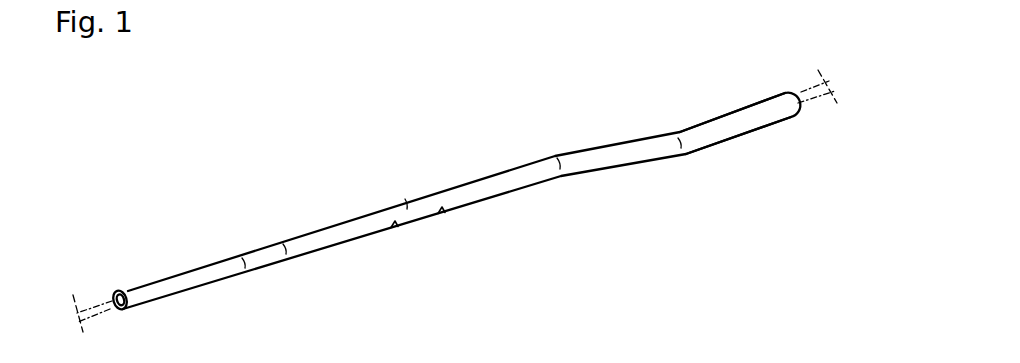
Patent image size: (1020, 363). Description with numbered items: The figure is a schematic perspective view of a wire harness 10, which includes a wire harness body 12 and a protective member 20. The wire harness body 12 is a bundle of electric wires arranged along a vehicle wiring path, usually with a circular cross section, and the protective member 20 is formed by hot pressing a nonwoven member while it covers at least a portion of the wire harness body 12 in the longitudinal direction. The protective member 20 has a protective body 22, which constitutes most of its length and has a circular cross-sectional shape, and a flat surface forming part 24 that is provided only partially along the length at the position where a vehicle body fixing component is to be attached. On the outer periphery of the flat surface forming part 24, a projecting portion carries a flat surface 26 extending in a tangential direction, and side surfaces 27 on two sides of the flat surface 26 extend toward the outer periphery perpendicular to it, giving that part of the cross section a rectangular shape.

The wire harness 10 is at (401, 149).
The wire harness body 12 is at (803, 84).
The protective member 20 is at (621, 140).
The protective body 22 is at (320, 233).
The flat surface forming part 24 is at (407, 208).
The flat surface 26 is at (418, 220).
The side surfaces 27 is at (437, 212).